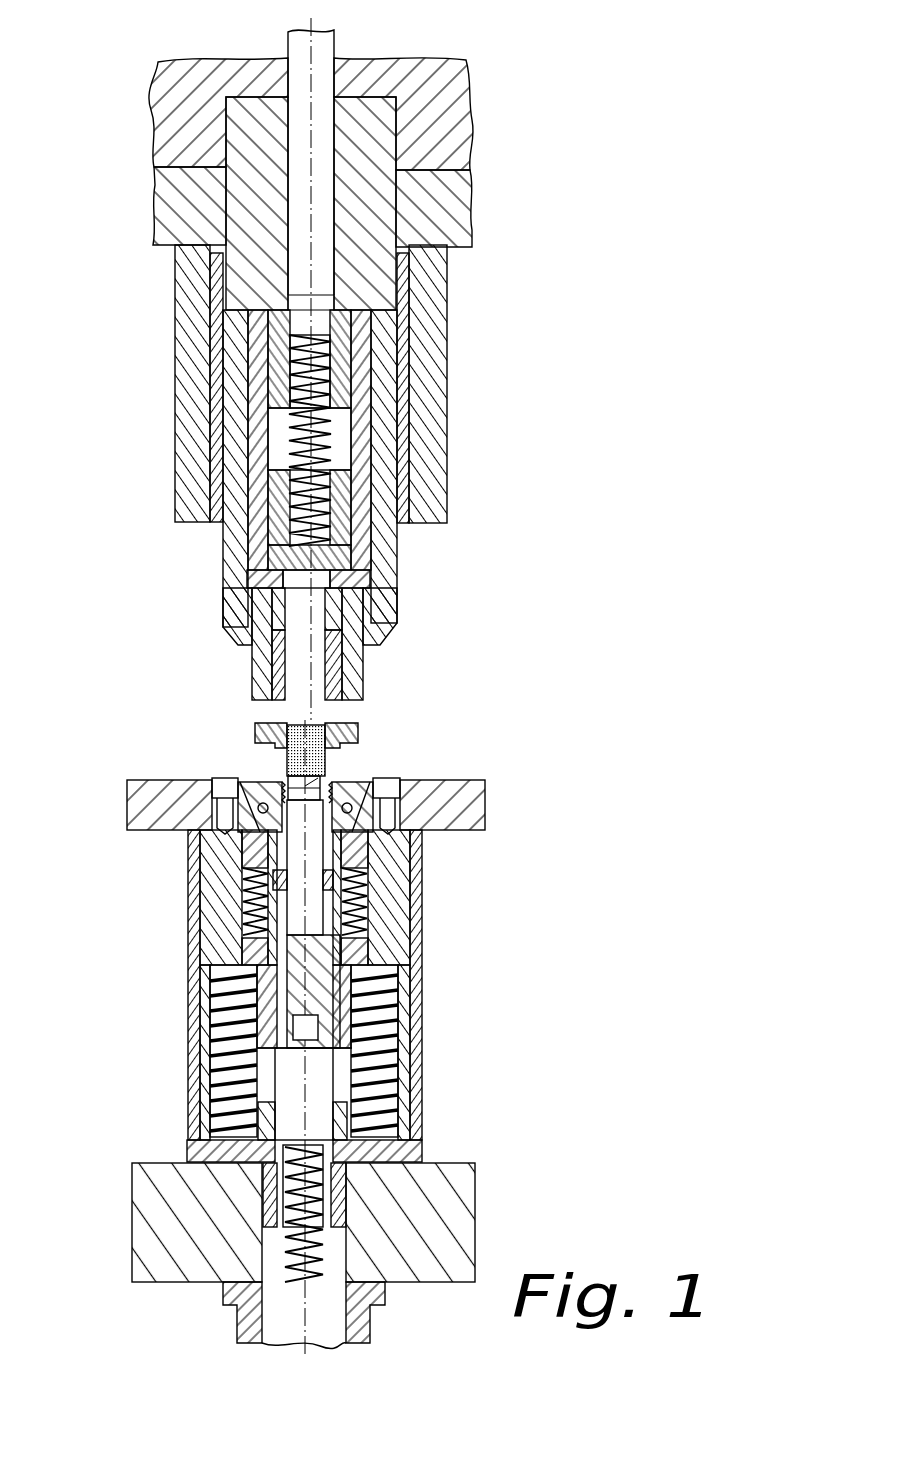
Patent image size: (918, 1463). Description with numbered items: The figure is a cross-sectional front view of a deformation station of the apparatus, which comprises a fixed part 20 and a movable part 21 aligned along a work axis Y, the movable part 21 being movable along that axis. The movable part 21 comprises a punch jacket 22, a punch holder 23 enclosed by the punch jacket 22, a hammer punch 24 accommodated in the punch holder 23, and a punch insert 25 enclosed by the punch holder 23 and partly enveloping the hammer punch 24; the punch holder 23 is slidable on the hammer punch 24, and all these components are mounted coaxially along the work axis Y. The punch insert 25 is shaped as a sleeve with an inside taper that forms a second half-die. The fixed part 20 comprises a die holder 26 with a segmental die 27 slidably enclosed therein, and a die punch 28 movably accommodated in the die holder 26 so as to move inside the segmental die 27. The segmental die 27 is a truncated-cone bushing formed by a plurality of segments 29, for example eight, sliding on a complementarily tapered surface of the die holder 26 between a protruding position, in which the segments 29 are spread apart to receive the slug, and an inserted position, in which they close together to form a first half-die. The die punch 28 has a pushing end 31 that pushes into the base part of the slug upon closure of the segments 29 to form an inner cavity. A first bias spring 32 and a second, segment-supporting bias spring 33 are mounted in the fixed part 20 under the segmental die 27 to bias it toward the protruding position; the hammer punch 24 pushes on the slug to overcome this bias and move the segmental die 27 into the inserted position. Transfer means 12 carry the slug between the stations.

The work axis Y is at (325, 60).
The movable part 21 is at (332, 403).
The punch jacket 22 is at (385, 552).
The punch holder 23 is at (355, 580).
The hammer punch 24 is at (312, 615).
The punch insert 25 is at (277, 677).
The transfer means 12 is at (357, 723).
The segments 29 is at (267, 783).
The pushing end 31 is at (305, 790).
The segmental die 27 is at (347, 778).
The die holder 26 is at (392, 863).
The die punch 28 is at (308, 907).
The second bias spring 33 is at (222, 921).
The first bias spring 32 is at (397, 997).
The fixed part 20 is at (290, 1017).